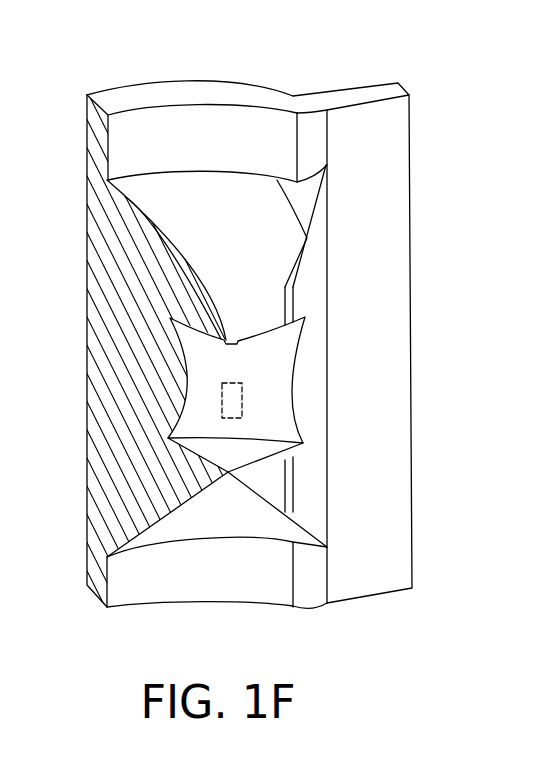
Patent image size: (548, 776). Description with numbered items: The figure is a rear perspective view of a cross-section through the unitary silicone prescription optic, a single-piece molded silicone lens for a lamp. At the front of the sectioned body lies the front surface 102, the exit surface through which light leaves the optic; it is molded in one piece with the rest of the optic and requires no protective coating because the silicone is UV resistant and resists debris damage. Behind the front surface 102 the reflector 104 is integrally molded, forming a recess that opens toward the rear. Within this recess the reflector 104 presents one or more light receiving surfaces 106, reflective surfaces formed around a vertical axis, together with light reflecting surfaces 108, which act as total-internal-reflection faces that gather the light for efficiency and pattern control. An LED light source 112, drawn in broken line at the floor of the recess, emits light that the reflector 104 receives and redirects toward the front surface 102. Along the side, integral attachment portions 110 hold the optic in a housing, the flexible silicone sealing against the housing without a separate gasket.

The front surface 102 is at (95, 92).
The reflector 104 is at (175, 482).
The light receiving surface 106 is at (282, 422).
The light reflecting surfaces 108 is at (292, 207).
The integral attachment portions 110 is at (400, 173).
The LED light source 112 is at (238, 397).